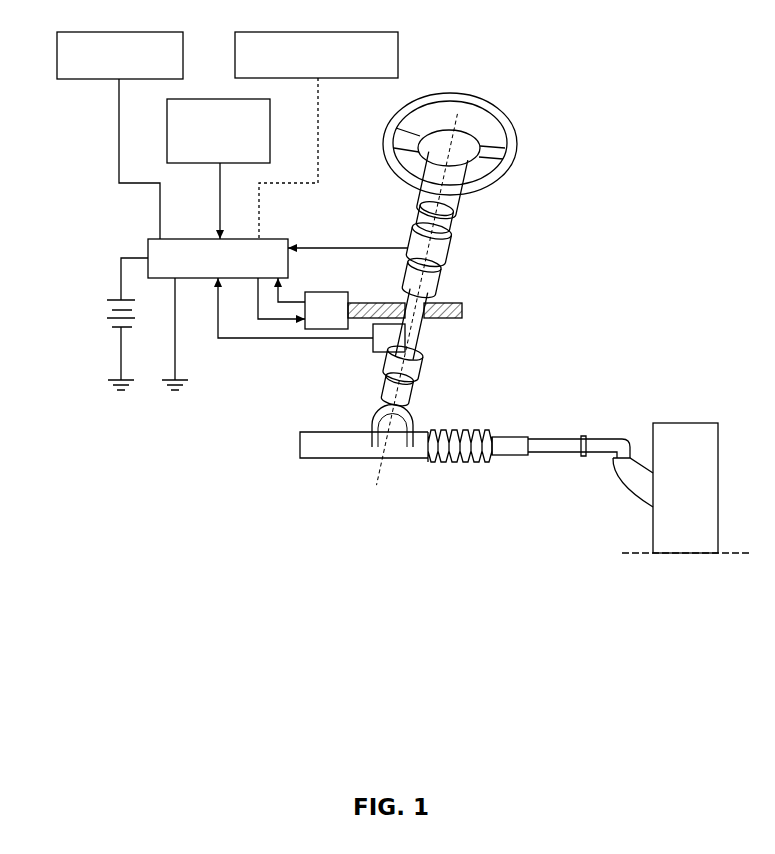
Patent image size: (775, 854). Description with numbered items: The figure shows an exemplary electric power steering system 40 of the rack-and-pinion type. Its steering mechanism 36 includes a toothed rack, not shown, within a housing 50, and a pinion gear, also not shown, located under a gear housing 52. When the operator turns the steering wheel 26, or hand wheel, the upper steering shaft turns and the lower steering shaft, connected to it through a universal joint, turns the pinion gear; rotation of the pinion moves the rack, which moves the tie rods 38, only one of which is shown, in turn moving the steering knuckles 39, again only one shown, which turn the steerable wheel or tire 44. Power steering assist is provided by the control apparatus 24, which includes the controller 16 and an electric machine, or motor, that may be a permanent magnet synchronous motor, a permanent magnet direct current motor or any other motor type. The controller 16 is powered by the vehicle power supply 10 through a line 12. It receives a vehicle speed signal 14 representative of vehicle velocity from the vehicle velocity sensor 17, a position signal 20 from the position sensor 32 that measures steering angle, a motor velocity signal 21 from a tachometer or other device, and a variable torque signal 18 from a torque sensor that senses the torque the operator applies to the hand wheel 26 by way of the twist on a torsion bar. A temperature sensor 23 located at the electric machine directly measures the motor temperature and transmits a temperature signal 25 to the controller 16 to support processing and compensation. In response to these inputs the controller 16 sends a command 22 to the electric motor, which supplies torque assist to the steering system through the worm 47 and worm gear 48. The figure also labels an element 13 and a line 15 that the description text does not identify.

The vehicle power supply 10 is at (110, 316).
The line 12 is at (131, 256).
The storage media 13 is at (83, 80).
The vehicle speed signal 14 is at (213, 172).
The storage media connection line 15 is at (118, 121).
The controller 16 is at (203, 238).
The vehicle velocity sensor 17 is at (219, 98).
The torque signal 18 is at (356, 245).
The position signal 20 is at (297, 340).
The motor velocity signal 21 is at (292, 298).
The command 22 is at (268, 339).
The temperature sensor 23 is at (400, 63).
The control apparatus 24 is at (574, 241).
The temperature signal 25 is at (320, 118).
The steering wheel 26 is at (484, 110).
The position sensor 32 is at (372, 345).
The steering mechanism 36 is at (478, 427).
The tie rods 38 is at (553, 452).
The steering knuckles 39 is at (631, 479).
The electric power steering system 40 is at (627, 306).
The steerable wheel 44 is at (678, 430).
The worm 47 is at (463, 308).
The worm gear 48 is at (333, 292).
The housing 50 is at (324, 458).
The gear housing 52 is at (372, 420).